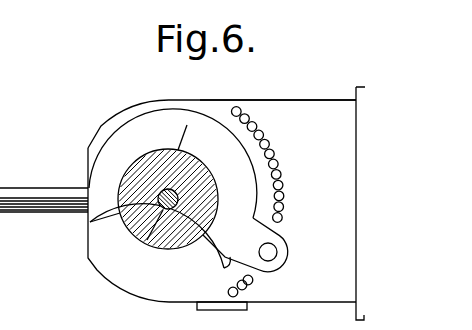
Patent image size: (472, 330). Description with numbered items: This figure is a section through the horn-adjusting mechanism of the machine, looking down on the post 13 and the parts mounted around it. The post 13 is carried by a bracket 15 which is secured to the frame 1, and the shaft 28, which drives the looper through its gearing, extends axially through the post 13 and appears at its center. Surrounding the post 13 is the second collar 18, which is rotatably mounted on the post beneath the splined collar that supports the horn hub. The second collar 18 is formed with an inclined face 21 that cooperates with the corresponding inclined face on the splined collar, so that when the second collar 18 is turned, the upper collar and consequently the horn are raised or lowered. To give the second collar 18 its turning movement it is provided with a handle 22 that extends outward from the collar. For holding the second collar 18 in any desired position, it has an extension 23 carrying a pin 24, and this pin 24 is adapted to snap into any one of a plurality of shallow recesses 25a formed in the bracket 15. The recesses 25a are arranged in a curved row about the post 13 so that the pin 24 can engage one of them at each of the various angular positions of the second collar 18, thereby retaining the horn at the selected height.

The frame 1 is at (356, 98).
The post 13 is at (161, 150).
The bracket 15 is at (301, 107).
The second collar 18 is at (108, 142).
The inclined face 21 is at (210, 142).
The handle 22 is at (25, 184).
The extension 23 is at (243, 258).
The pin 24 is at (270, 250).
The shallow recesses 25a is at (283, 207).
The shaft 28 is at (145, 243).